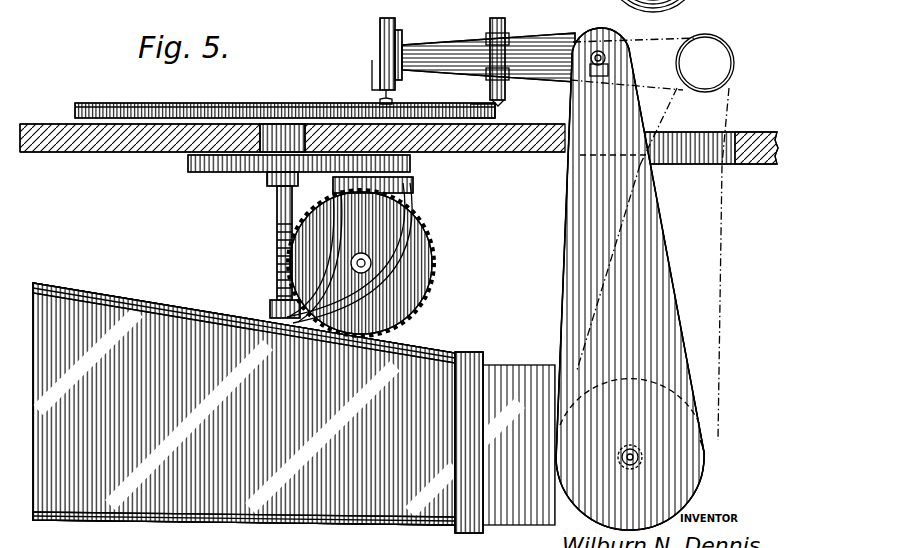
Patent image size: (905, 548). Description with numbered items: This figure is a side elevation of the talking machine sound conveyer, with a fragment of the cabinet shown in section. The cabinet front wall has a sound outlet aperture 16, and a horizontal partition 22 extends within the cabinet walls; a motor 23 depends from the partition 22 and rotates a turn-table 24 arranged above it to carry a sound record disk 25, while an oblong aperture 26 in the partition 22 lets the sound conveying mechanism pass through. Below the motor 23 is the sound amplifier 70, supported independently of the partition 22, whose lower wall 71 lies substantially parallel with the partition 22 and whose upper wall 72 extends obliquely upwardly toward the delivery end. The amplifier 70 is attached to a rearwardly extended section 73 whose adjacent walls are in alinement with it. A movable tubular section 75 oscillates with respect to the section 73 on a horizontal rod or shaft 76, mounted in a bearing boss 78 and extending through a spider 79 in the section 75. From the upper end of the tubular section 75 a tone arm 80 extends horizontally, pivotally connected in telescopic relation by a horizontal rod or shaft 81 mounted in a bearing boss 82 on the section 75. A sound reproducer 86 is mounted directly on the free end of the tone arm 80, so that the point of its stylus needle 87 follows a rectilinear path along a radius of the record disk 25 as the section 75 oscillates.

The sound outlet aperture 16 is at (715, 0).
The partition 22 is at (130, 142).
The motor 23 is at (371, 262).
The turn-table 24 is at (495, 116).
The sound record disk 25 is at (117, 104).
The oblong aperture 26 is at (732, 166).
The sound amplifier 70 is at (294, 412).
The lower wall 71 is at (212, 523).
The upper wall 72 is at (170, 308).
The rearwardly extended section 73 is at (503, 397).
The movable tubular section 75 is at (575, 290).
The horizontal rod or shaft 76 is at (628, 447).
The bearing boss 78 is at (640, 457).
The spider 79 is at (707, 478).
The tone arm 80 is at (463, 43).
The horizontal rod or shaft 81 is at (598, 52).
The bearing boss 82 is at (605, 56).
The sound reproducer 86 is at (366, 54).
The stylus needle 87 is at (375, 98).